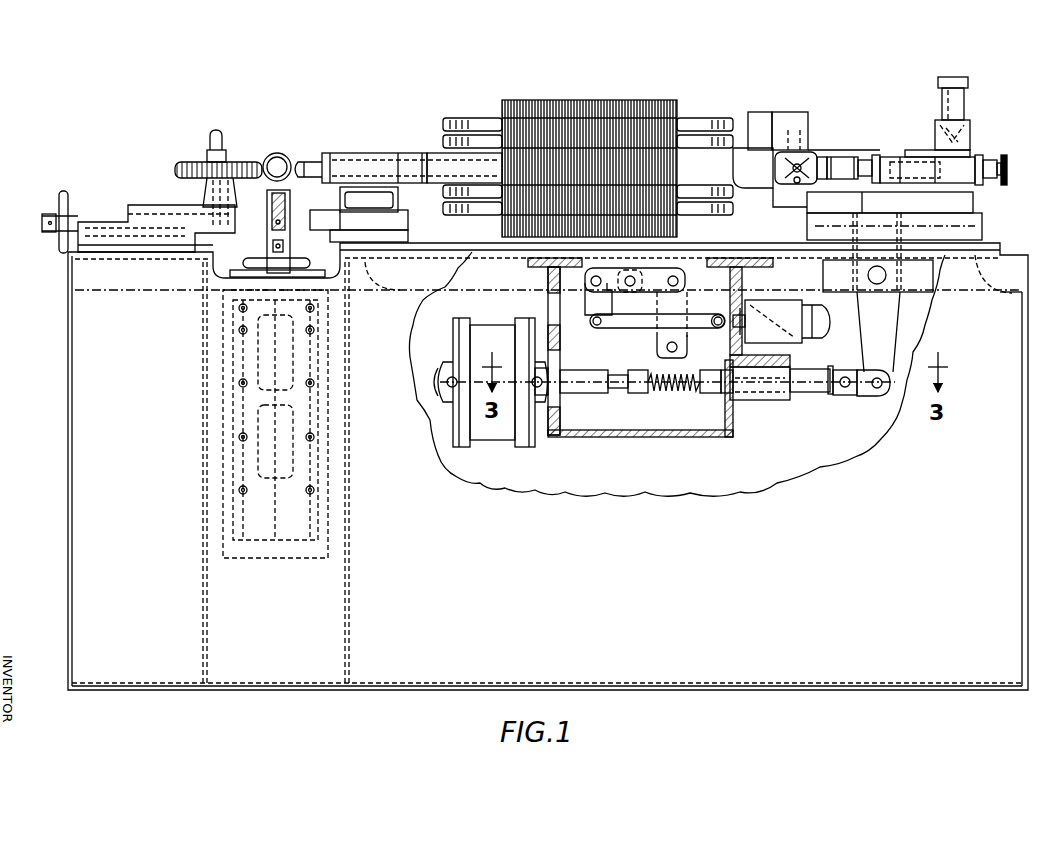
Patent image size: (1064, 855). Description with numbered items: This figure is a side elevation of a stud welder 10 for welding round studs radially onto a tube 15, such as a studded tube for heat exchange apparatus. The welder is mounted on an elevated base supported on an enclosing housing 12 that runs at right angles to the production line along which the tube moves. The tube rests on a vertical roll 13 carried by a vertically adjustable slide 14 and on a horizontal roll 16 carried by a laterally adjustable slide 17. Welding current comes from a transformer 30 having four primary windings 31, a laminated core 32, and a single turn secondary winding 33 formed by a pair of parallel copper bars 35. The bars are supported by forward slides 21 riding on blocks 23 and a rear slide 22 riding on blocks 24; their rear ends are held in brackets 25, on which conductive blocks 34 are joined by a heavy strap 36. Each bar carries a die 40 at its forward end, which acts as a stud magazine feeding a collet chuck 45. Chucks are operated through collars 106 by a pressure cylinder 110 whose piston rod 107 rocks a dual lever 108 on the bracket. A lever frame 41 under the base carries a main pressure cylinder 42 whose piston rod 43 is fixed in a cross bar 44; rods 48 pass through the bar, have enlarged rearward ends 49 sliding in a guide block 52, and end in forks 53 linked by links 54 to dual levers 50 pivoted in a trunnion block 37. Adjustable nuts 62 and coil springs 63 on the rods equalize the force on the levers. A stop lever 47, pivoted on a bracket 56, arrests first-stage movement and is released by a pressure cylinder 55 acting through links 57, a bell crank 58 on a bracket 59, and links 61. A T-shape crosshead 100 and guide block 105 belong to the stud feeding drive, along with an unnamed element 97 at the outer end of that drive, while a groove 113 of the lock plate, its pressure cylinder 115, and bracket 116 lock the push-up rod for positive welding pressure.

The stud welder 10 is at (818, 108).
The enclosing housing 12 is at (1008, 497).
The vertical roll 13 is at (270, 222).
The vertically adjustable slide 14 is at (290, 236).
The tube 15 is at (279, 158).
The horizontal roll 16 is at (246, 165).
The laterally adjustable slide 17 is at (160, 207).
The forward slide 21 is at (393, 218).
The rear slide 22 is at (968, 205).
The tracks or blocks 23 is at (405, 233).
The tracks or blocks 24 is at (980, 232).
The bracket 25 is at (808, 155).
The transformer 30 is at (589, 153).
The primary windings 31 is at (707, 125).
The laminated core 32 is at (633, 112).
The secondary winding 33 is at (421, 143).
The electrically conductive block 34 is at (758, 112).
The bar 35 is at (735, 172).
The strap 36 is at (790, 118).
The trunnion block 37 is at (836, 274).
The die 40 is at (364, 160).
The lever frame 41 is at (585, 437).
The pressure cylinder 42 is at (506, 432).
The piston rod 43 is at (590, 380).
The cross bar 44 is at (637, 394).
The collet chuck 45 is at (314, 165).
The lock or stop lever 47 is at (688, 302).
The rod 48 is at (728, 393).
The enlarged rearward end 49 is at (816, 391).
The dual lever 50 is at (890, 328).
The guide block 52 is at (768, 398).
The fork 53 is at (845, 395).
The link 54 is at (862, 397).
The pressure cylinder 55 is at (781, 321).
The bracket 56 is at (658, 355).
The link 57 is at (632, 322).
The bell crank 58 is at (592, 307).
The bracket 59 is at (562, 279).
The link 61 is at (655, 275).
The adjustable nut 62 is at (708, 394).
The coil spring 63 is at (662, 394).
The handwheel 97 is at (1010, 166).
The crosshead 100 is at (990, 177).
The guide block 105 is at (966, 162).
The collar 106 is at (353, 178).
The piston rod 107 is at (822, 160).
The dual lever 108 is at (797, 183).
The pressure cylinder 110 is at (840, 158).
The notch or groove 113 is at (940, 128).
The pressure cylinder 115 is at (976, 90).
The bracket 116 is at (972, 126).